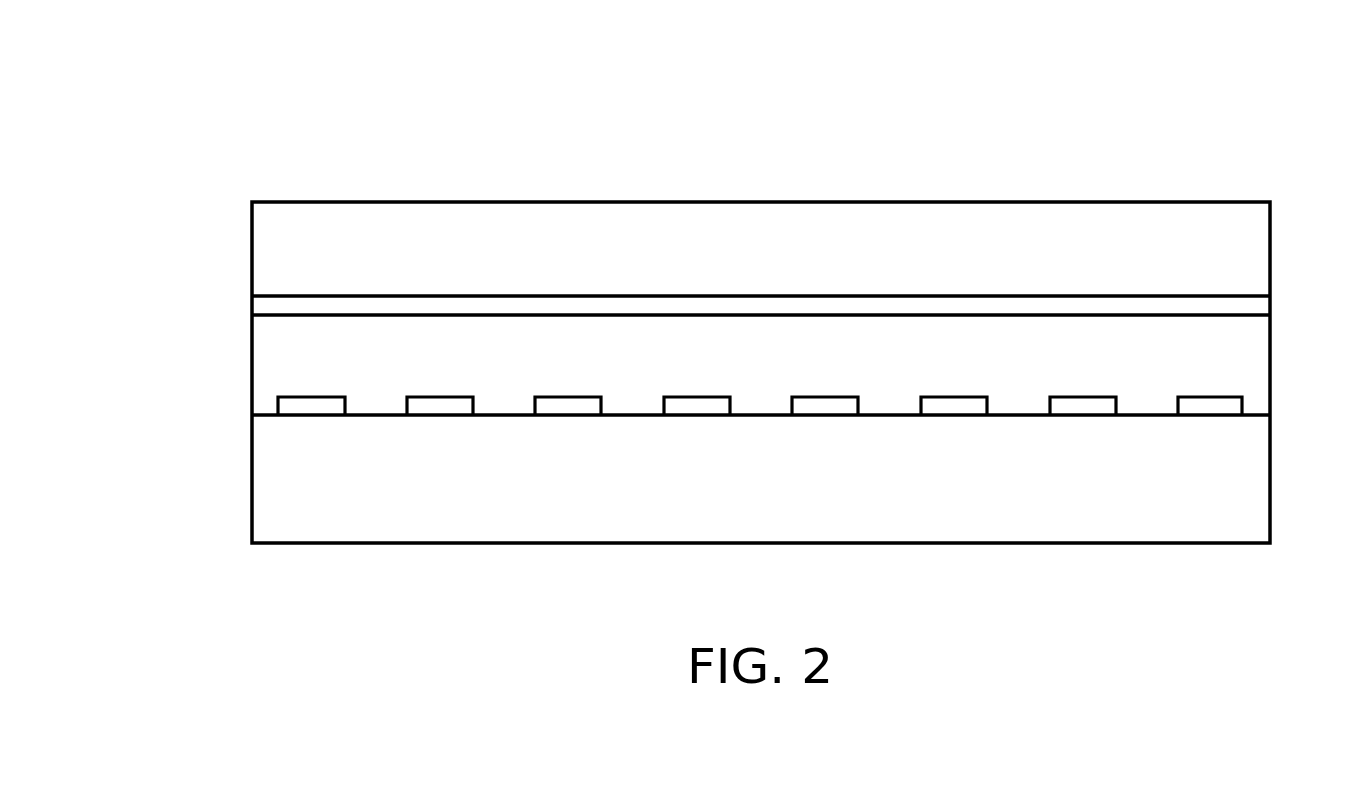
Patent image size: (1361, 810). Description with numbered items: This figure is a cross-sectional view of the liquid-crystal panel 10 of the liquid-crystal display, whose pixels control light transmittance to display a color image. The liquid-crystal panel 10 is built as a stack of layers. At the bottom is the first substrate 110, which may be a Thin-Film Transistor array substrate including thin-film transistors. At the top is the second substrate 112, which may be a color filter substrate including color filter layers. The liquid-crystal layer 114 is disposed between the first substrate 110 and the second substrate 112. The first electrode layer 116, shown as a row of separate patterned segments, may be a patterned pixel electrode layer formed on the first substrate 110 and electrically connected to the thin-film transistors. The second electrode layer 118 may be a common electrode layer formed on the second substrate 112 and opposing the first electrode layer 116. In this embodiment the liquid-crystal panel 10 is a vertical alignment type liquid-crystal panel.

The liquid-crystal panel 10 is at (206, 73).
The first substrate 110 is at (1258, 479).
The second substrate 112 is at (1258, 250).
The liquid-crystal layer 114 is at (1258, 352).
The first electrode layer 116 is at (1245, 407).
The second electrode layer 118 is at (1258, 305).